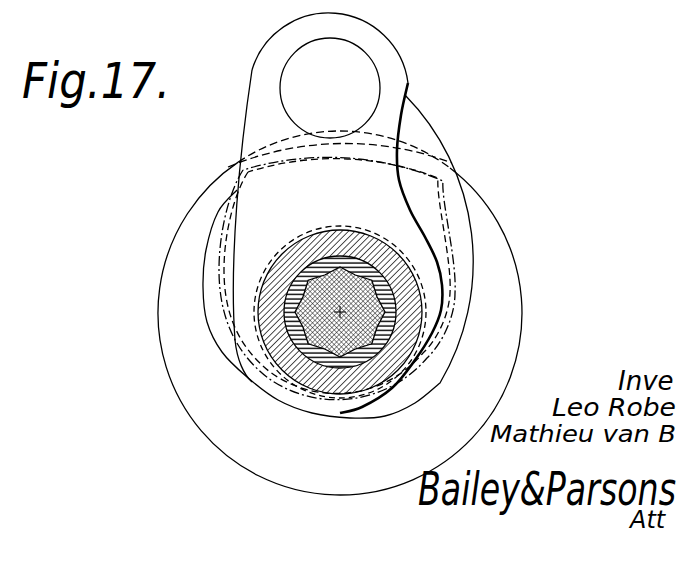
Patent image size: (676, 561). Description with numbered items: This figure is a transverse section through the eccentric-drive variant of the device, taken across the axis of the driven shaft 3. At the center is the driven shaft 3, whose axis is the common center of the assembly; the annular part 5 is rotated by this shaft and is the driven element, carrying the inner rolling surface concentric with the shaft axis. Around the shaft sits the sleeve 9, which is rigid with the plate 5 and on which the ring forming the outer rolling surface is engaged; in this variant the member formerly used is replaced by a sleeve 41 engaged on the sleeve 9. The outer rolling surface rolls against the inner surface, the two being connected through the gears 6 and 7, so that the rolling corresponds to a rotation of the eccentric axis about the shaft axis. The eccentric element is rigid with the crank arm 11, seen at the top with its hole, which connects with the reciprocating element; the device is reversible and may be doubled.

The annular part 5 is at (475, 200).
The crank arm 11 is at (380, 38).
The gear 7 is at (228, 247).
The sleeve 41 is at (387, 263).
The gear 6 is at (260, 287).
The sleeve 9 is at (373, 310).
The driven shaft 3 is at (348, 340).